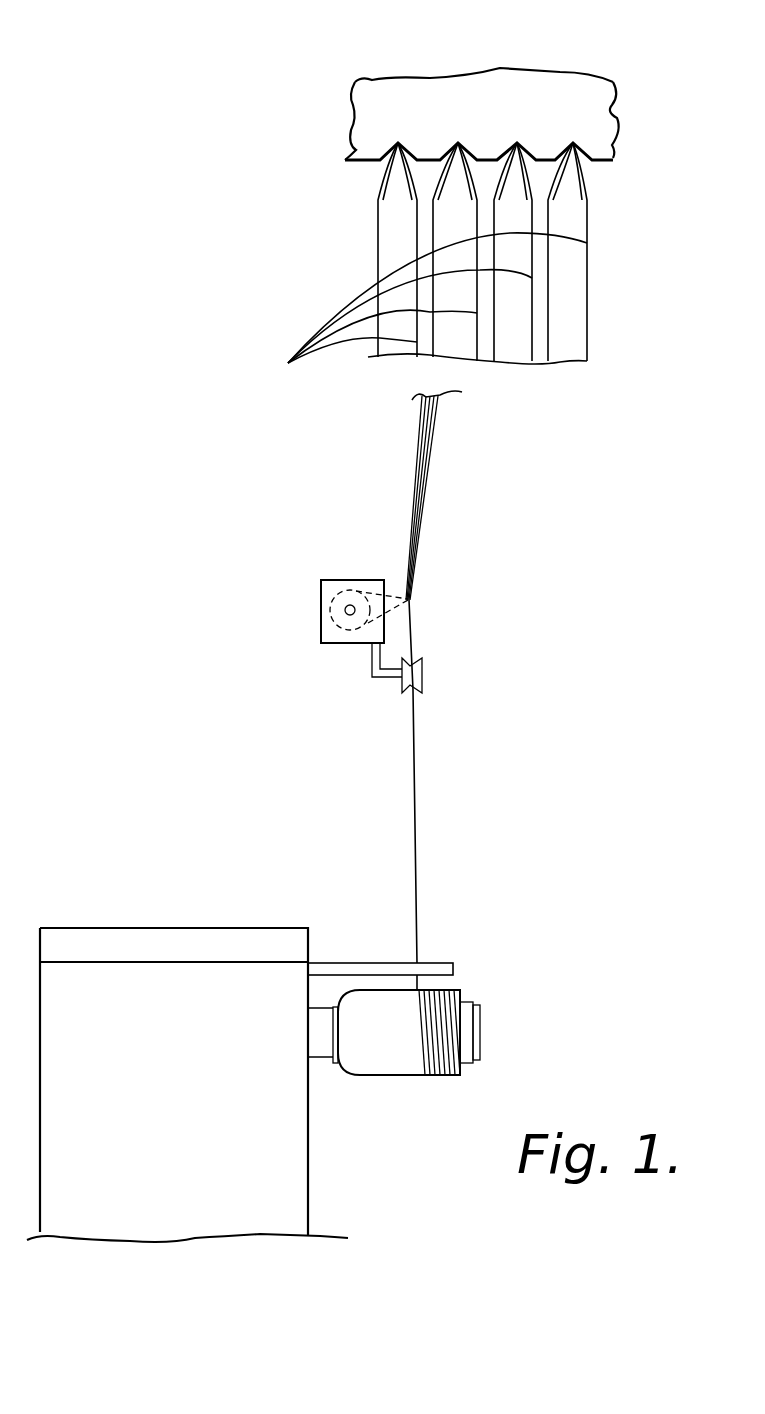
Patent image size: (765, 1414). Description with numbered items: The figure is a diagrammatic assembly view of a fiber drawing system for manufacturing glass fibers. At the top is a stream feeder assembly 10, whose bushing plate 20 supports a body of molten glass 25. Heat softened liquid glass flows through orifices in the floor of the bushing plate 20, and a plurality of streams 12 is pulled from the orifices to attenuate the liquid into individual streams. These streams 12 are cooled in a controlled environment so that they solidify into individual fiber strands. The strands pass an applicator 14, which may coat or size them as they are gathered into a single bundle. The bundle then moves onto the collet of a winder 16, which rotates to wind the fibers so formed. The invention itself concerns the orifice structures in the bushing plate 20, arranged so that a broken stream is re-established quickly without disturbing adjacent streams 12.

The stream feeder assembly 10 is at (425, 68).
The streams 12 is at (290, 362).
The applicator 14 is at (321, 610).
The winder 16 is at (312, 1120).
The bushing plate 20 is at (356, 128).
The body of molten glass 25 is at (580, 117).